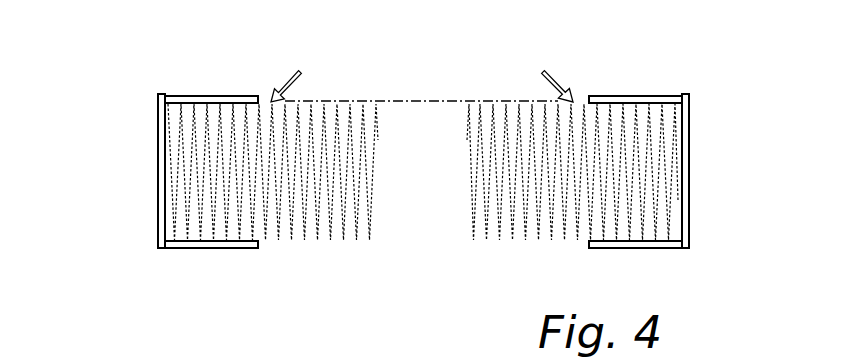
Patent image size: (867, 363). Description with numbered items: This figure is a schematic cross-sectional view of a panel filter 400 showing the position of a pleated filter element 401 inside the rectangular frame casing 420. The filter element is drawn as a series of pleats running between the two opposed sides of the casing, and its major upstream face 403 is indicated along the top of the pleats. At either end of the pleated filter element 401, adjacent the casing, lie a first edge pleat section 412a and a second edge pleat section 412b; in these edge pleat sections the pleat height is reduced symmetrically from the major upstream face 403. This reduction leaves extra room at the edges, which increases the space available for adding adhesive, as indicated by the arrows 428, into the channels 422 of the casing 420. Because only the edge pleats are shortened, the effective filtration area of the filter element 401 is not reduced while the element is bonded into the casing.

The panel filter 400 is at (104, 105).
The pleated filter element 401 is at (472, 143).
The major upstream face 403 is at (412, 100).
The first edge pleat section 412a is at (185, 121).
The second edge pleat section 412b is at (658, 115).
The rectangular frame casing 420 is at (158, 230).
The channels 422 is at (228, 108).
The arrows 428 is at (296, 75).